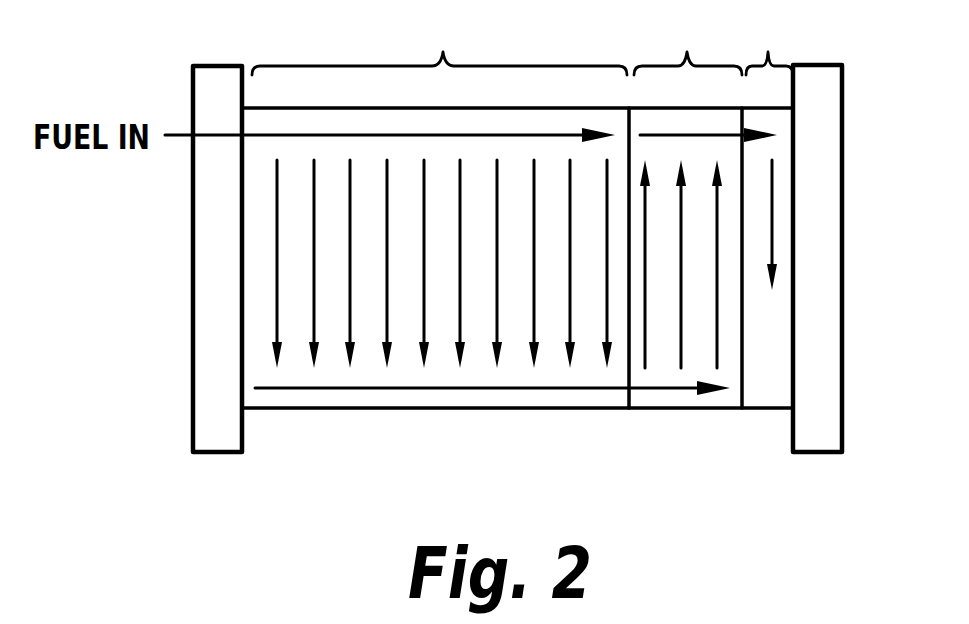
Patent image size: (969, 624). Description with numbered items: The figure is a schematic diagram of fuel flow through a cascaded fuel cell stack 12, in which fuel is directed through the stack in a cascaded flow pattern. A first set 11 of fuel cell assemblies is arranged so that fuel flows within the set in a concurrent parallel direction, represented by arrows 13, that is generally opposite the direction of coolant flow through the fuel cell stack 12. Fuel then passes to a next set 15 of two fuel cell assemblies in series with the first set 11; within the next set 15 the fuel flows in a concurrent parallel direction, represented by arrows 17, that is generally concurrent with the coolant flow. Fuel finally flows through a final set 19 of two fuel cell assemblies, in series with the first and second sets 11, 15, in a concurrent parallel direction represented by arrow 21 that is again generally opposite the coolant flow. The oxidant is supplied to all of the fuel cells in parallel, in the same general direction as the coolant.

The first set of fuel cell assemblies 11 is at (439, 41).
The fuel cell stack 12 is at (330, 447).
The arrows 13 is at (387, 255).
The next set of fuel cell assemblies 15 is at (685, 208).
The arrows 17 is at (646, 255).
The final set of fuel cell assemblies 19 is at (770, 208).
The arrow 21 is at (773, 203).